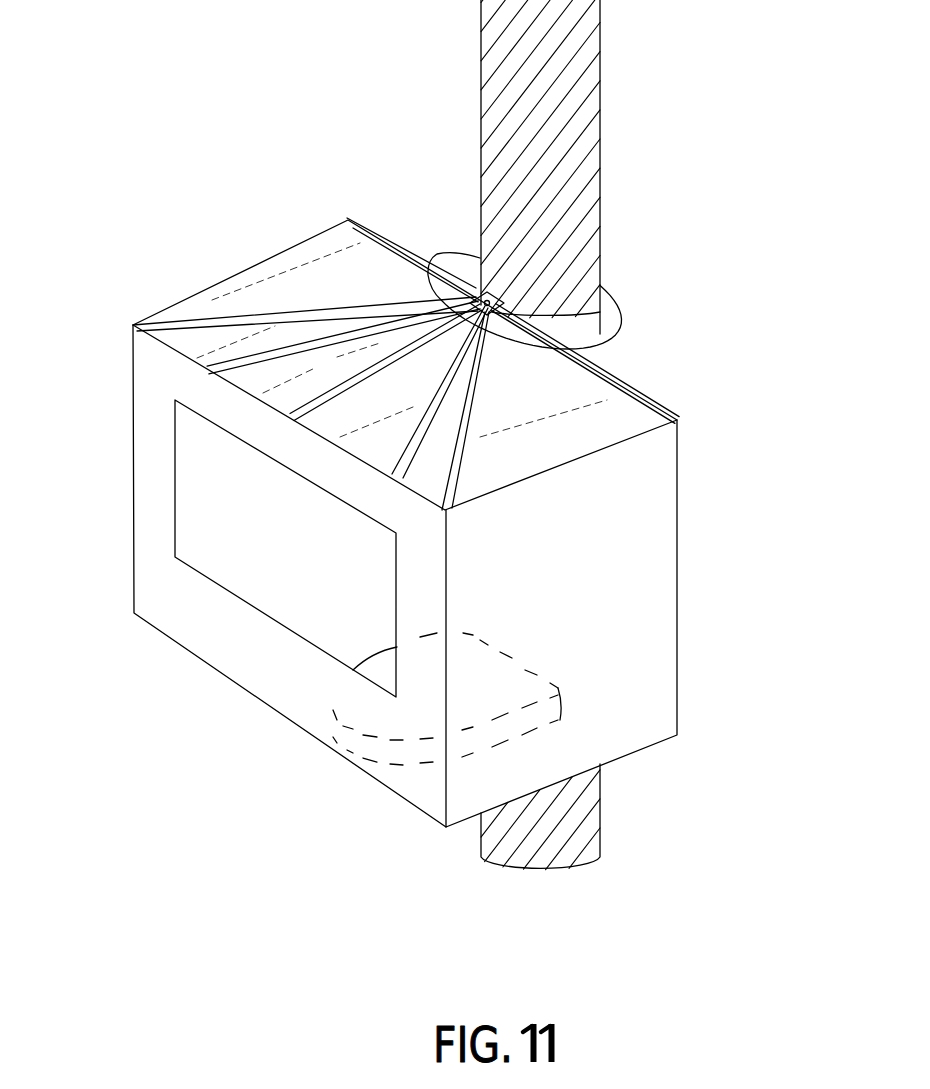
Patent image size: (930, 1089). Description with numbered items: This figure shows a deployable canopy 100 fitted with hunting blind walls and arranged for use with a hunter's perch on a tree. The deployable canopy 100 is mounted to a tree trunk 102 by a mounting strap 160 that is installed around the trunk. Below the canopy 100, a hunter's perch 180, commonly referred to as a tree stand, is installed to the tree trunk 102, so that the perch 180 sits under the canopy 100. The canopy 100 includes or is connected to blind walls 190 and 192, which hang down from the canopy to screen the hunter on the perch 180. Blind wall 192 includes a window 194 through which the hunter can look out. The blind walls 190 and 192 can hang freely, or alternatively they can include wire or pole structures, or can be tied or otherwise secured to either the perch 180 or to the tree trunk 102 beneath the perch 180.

The deployable canopy 100 is at (623, 428).
The tree trunk 102 is at (600, 190).
The mounting strap 160 is at (597, 318).
The hunter's perch 180 is at (411, 747).
The blind wall 190 is at (653, 597).
The blind wall 192 is at (262, 667).
The window 194 is at (197, 527).